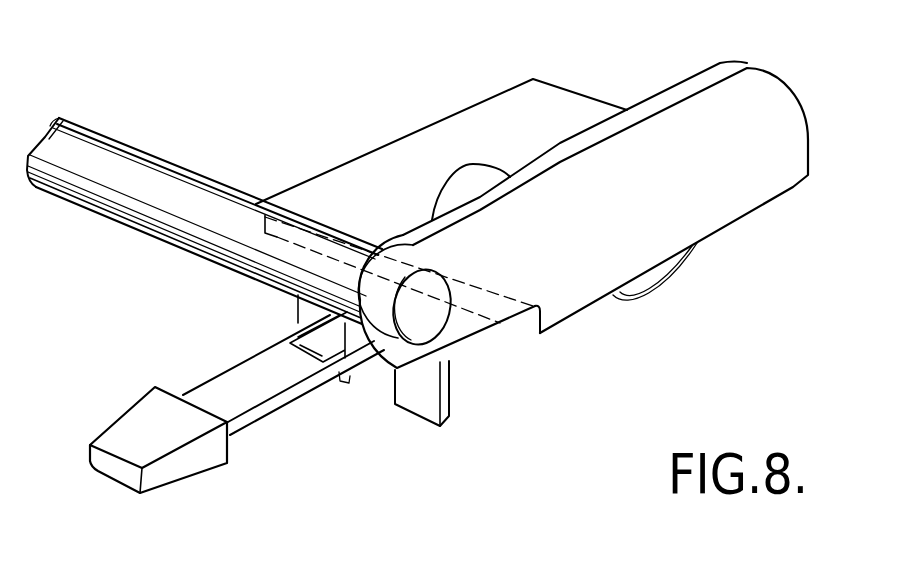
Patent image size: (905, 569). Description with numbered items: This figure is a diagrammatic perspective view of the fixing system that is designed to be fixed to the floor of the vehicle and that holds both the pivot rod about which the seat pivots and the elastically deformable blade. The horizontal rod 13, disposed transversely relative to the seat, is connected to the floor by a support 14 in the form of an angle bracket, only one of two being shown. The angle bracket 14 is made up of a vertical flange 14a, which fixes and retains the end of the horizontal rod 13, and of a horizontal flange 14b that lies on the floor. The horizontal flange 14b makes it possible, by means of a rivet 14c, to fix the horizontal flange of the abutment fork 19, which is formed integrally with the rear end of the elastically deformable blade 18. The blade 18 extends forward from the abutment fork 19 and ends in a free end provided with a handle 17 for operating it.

The horizontal rod 13 is at (140, 180).
The support 14 is at (728, 243).
The vertical flange 14a is at (687, 137).
The horizontal flange 14b is at (367, 205).
The rivet 14c is at (457, 178).
The handle 17 is at (180, 463).
The elastically deformable blade 18 is at (282, 424).
The abutment fork 19 is at (456, 437).